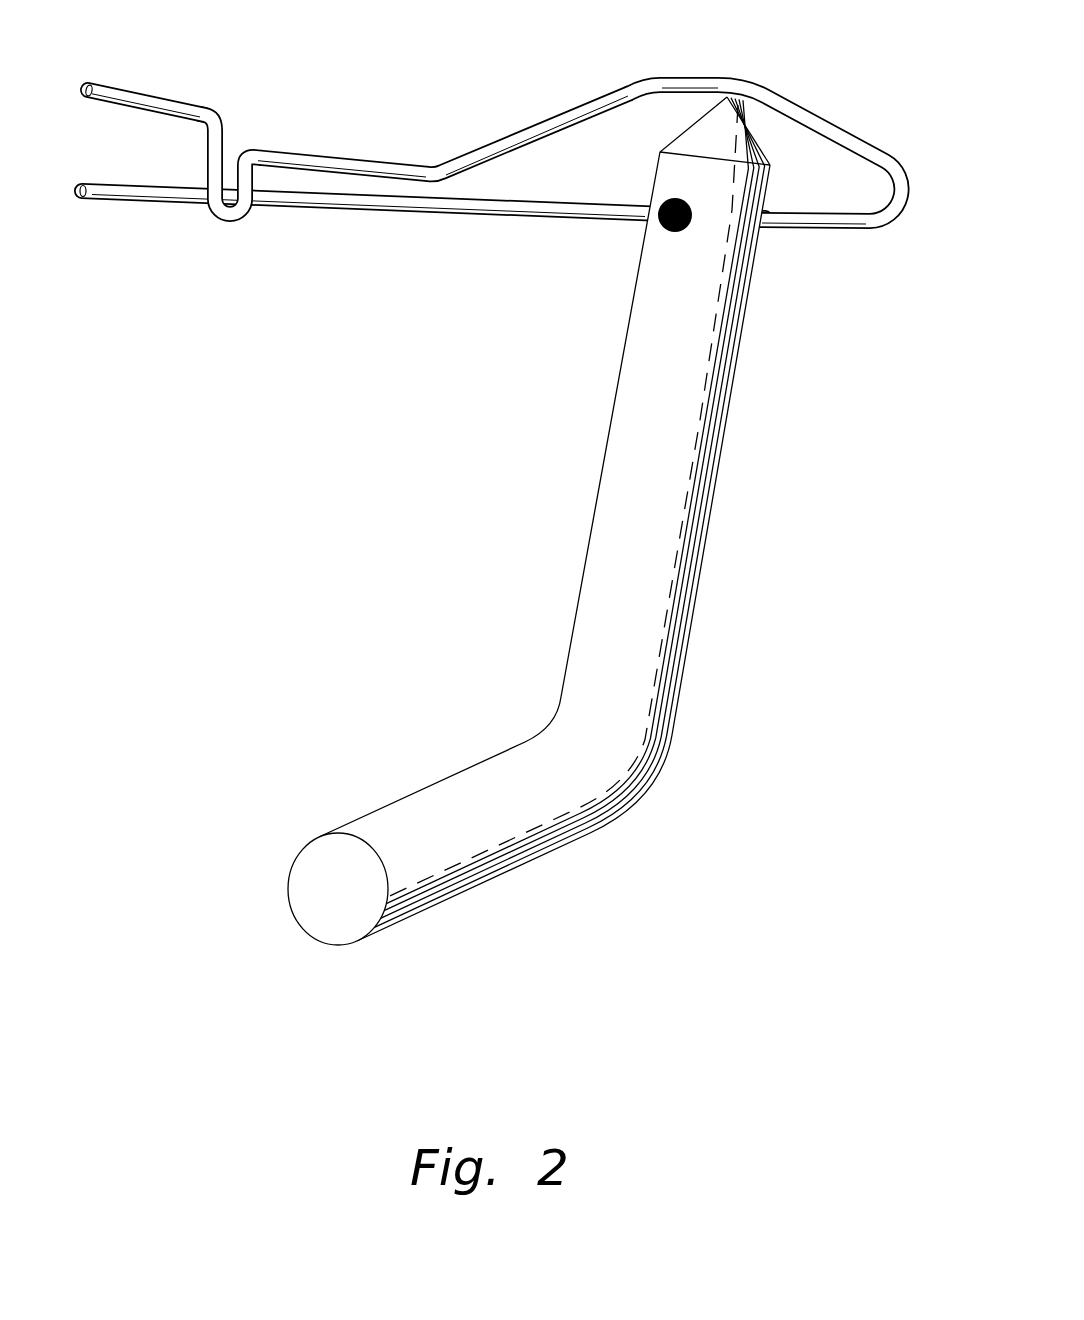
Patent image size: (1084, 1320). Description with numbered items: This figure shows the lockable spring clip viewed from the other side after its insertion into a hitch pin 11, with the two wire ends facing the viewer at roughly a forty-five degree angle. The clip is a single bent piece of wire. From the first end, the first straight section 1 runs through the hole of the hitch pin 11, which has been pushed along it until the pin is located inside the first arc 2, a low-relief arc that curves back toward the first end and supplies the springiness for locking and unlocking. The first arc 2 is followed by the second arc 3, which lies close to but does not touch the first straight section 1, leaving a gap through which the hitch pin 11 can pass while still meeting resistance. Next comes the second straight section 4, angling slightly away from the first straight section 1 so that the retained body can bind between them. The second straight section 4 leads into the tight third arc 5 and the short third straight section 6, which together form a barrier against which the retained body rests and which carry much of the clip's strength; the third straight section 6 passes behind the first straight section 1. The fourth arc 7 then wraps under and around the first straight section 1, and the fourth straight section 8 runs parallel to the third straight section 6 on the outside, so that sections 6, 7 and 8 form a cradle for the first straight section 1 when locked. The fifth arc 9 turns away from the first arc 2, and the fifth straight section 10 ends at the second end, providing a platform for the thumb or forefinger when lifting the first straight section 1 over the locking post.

The first straight section 1 is at (468, 218).
The first arc 2 is at (906, 157).
The second arc 3 is at (432, 165).
The second straight section 4 is at (353, 155).
The third arc 5 is at (248, 138).
The third straight section 6 is at (236, 150).
The fourth arc 7 is at (232, 225).
The fourth straight section 8 is at (206, 153).
The fifth arc 9 is at (216, 108).
The fifth straight section 10 is at (122, 85).
The hitch pin 11 is at (688, 628).